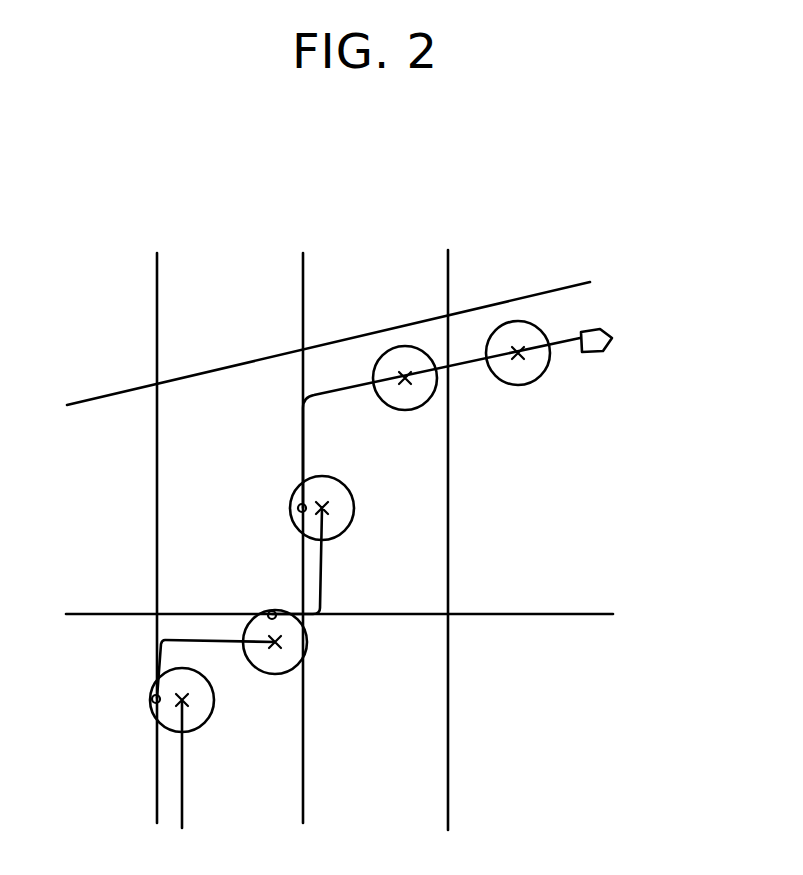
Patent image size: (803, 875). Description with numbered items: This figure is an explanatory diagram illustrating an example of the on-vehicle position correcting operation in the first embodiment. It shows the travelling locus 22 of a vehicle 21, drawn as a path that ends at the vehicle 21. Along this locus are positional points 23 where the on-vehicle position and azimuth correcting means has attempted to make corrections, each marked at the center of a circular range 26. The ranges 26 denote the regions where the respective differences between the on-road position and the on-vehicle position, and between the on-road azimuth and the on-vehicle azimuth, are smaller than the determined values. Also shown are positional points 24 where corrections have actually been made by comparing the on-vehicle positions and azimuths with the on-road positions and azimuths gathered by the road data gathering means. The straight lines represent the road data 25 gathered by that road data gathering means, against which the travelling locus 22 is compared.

The vehicle 21 is at (598, 352).
The travelling locus 22 is at (335, 390).
The positional points 23 is at (405, 372).
The positional points 24 is at (298, 512).
The road data 25 is at (157, 318).
The ranges 26 is at (405, 410).